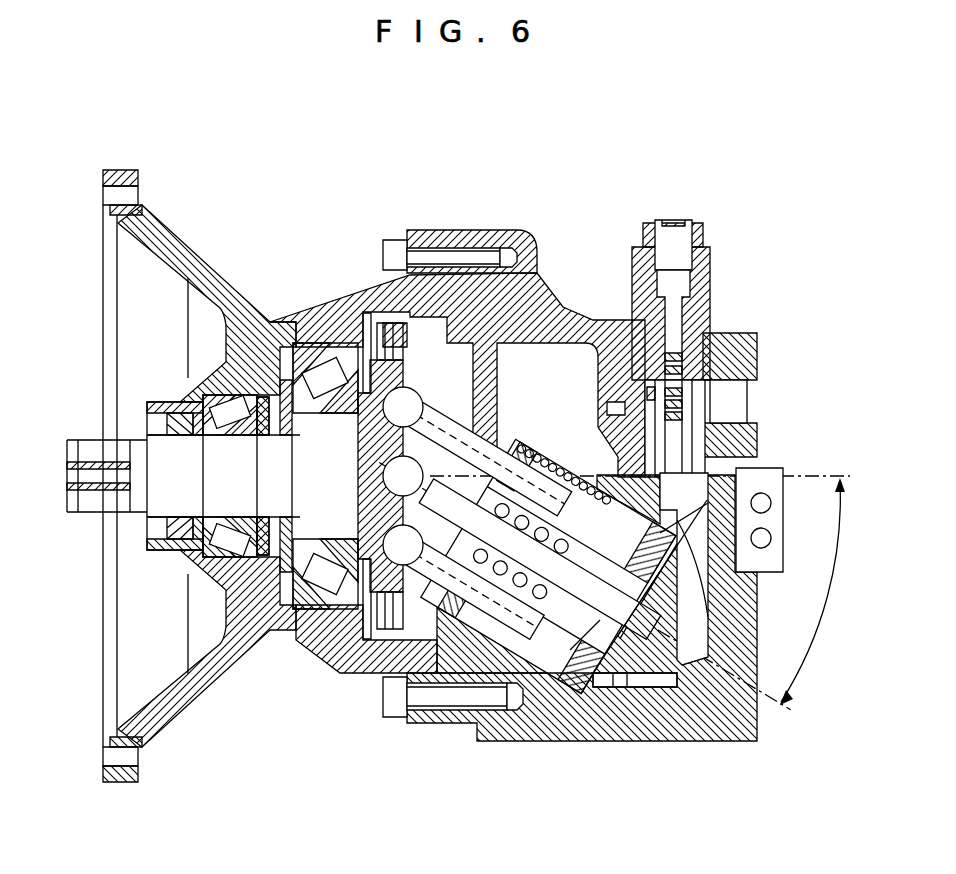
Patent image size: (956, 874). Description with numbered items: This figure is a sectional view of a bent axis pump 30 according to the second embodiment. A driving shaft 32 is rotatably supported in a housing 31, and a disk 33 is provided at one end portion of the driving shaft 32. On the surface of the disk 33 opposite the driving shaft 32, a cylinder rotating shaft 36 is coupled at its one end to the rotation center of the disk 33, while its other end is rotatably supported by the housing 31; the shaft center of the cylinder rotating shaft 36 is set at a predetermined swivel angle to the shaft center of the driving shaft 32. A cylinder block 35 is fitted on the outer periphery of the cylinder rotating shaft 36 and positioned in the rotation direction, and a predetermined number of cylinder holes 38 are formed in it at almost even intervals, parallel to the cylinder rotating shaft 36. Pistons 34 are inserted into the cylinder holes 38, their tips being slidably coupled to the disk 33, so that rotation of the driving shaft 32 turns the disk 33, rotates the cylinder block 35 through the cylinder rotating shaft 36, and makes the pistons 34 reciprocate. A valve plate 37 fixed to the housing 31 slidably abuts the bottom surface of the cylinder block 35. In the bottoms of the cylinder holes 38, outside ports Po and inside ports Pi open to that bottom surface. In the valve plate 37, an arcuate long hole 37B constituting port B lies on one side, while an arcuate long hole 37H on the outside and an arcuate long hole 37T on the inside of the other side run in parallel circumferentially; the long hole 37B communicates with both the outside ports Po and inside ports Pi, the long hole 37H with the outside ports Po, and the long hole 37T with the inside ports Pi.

The bent axis pump 30 is at (311, 266).
The housing 31 is at (483, 232).
The driving shaft 32 is at (92, 440).
The disk 33 is at (345, 600).
The pistons 34 is at (433, 727).
The cylinder block 35 is at (522, 650).
The cylinder rotating shaft 36 is at (630, 690).
The valve plate 37 is at (585, 650).
The arcuate long hole 37B is at (582, 680).
The arcuate long hole 37T is at (688, 690).
The arcuate long hole 37H is at (725, 690).
The cylinder holes 38 is at (478, 690).
The inside ports Pi is at (556, 680).
The outside ports Po is at (730, 477).